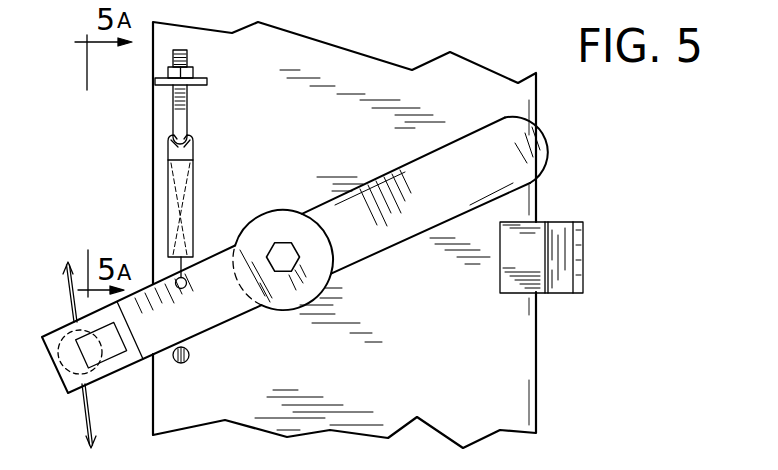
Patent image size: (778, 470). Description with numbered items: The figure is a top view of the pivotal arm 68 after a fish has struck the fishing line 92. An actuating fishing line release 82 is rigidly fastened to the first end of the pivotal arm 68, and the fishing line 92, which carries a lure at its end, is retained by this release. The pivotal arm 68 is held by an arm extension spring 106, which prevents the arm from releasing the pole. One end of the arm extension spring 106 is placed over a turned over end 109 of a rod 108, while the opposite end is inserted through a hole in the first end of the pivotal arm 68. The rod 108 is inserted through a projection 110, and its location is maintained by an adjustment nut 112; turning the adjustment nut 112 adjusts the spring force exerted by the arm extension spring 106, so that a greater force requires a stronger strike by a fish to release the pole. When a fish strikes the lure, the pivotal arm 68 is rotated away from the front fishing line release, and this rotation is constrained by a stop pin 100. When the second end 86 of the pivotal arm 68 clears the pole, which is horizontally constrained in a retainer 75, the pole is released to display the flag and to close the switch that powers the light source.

The pivotal arm 68 is at (443, 147).
The retainer 75 is at (585, 254).
The actuating fishing line release 82 is at (58, 386).
The second end 86 is at (543, 172).
The fishing line 92 is at (62, 300).
The stop pin 100 is at (190, 360).
The arm extension spring 106 is at (194, 192).
The rod 108 is at (189, 119).
The turned over end 109 is at (191, 135).
The projection 110 is at (203, 85).
The adjustment nut 112 is at (190, 66).